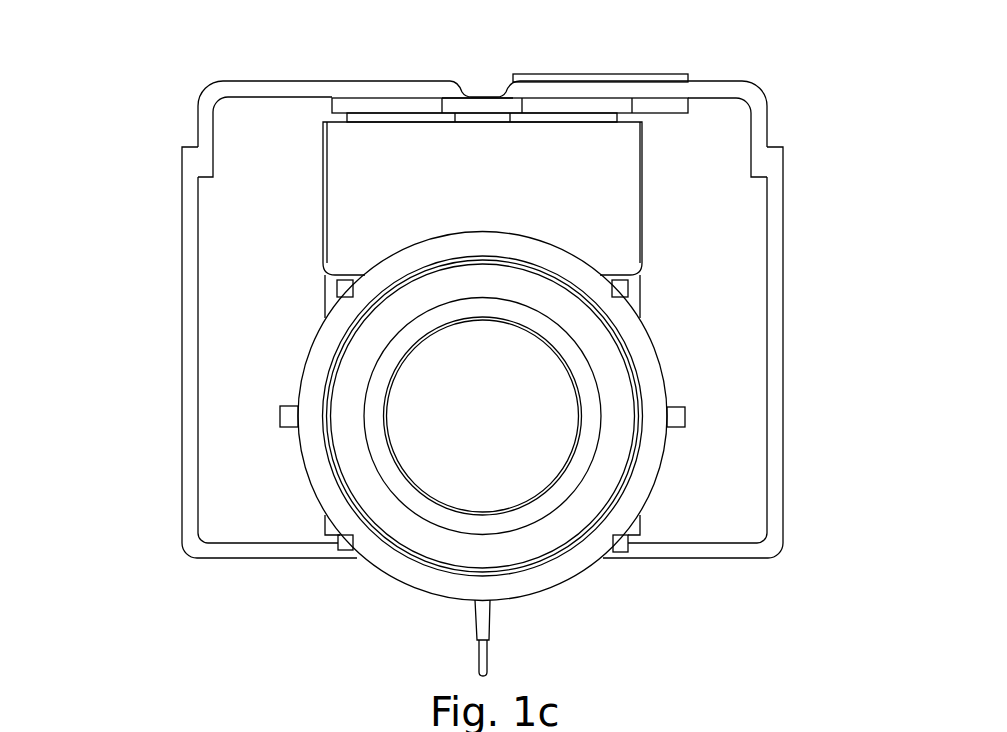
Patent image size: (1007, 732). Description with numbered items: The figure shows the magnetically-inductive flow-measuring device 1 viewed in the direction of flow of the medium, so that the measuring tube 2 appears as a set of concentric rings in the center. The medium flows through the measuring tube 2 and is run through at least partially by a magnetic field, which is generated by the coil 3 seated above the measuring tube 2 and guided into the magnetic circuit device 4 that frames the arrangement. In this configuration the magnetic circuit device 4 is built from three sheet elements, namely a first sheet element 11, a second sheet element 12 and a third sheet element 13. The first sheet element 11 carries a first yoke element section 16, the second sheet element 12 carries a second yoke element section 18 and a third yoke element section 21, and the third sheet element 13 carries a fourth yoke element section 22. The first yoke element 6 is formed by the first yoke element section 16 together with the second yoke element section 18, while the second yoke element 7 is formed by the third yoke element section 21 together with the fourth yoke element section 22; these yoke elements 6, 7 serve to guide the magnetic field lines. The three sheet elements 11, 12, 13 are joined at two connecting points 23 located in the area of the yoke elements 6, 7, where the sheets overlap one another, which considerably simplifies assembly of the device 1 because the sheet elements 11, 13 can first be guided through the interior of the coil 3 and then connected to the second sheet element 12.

The magnetically-inductive flow-measuring device 1 is at (108, 65).
The measuring tube 2 is at (565, 570).
The coil 3 is at (612, 222).
The magnetic circuit device 4 is at (173, 261).
The first yoke element 6 is at (180, 308).
The second yoke element 7 is at (785, 292).
The first sheet element 11 is at (297, 90).
The second sheet element 12 is at (252, 550).
The third sheet element 13 is at (730, 90).
The first yoke element section 16 is at (370, 90).
The second yoke element section 18 is at (190, 428).
The third yoke element section 21 is at (718, 552).
The fourth yoke element section 22 is at (692, 90).
The connecting points 23 is at (187, 140).